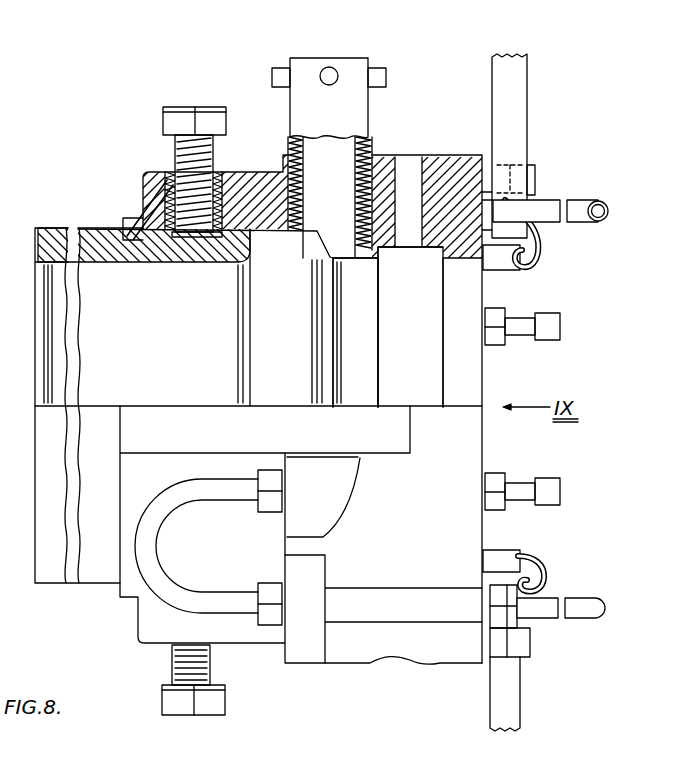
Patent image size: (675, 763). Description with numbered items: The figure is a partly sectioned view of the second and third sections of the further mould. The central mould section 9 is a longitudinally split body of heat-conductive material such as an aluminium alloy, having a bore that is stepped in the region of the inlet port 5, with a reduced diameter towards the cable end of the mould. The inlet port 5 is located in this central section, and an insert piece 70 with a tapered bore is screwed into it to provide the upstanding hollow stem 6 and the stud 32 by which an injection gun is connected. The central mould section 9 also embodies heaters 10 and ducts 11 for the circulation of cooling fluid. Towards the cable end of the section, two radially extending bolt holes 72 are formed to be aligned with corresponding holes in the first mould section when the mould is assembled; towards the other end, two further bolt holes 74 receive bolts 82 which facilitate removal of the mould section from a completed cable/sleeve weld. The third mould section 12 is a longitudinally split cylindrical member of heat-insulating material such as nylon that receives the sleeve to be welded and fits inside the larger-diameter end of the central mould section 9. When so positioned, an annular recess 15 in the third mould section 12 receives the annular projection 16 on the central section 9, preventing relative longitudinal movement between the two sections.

The inlet port 5 is at (356, 258).
The upstanding hollow stem 6 is at (335, 77).
The central mould section 9 is at (433, 154).
The heaters 10 is at (504, 259).
The ducts 11 is at (569, 202).
The third mould section 12 is at (63, 220).
The annular recess 15 is at (130, 242).
The projection 16 is at (134, 217).
The stud 32 is at (336, 84).
The insert piece 70 is at (292, 146).
The bolt holes 72 is at (408, 232).
The bolt holes 74 is at (168, 182).
The bolts 82 is at (173, 118).